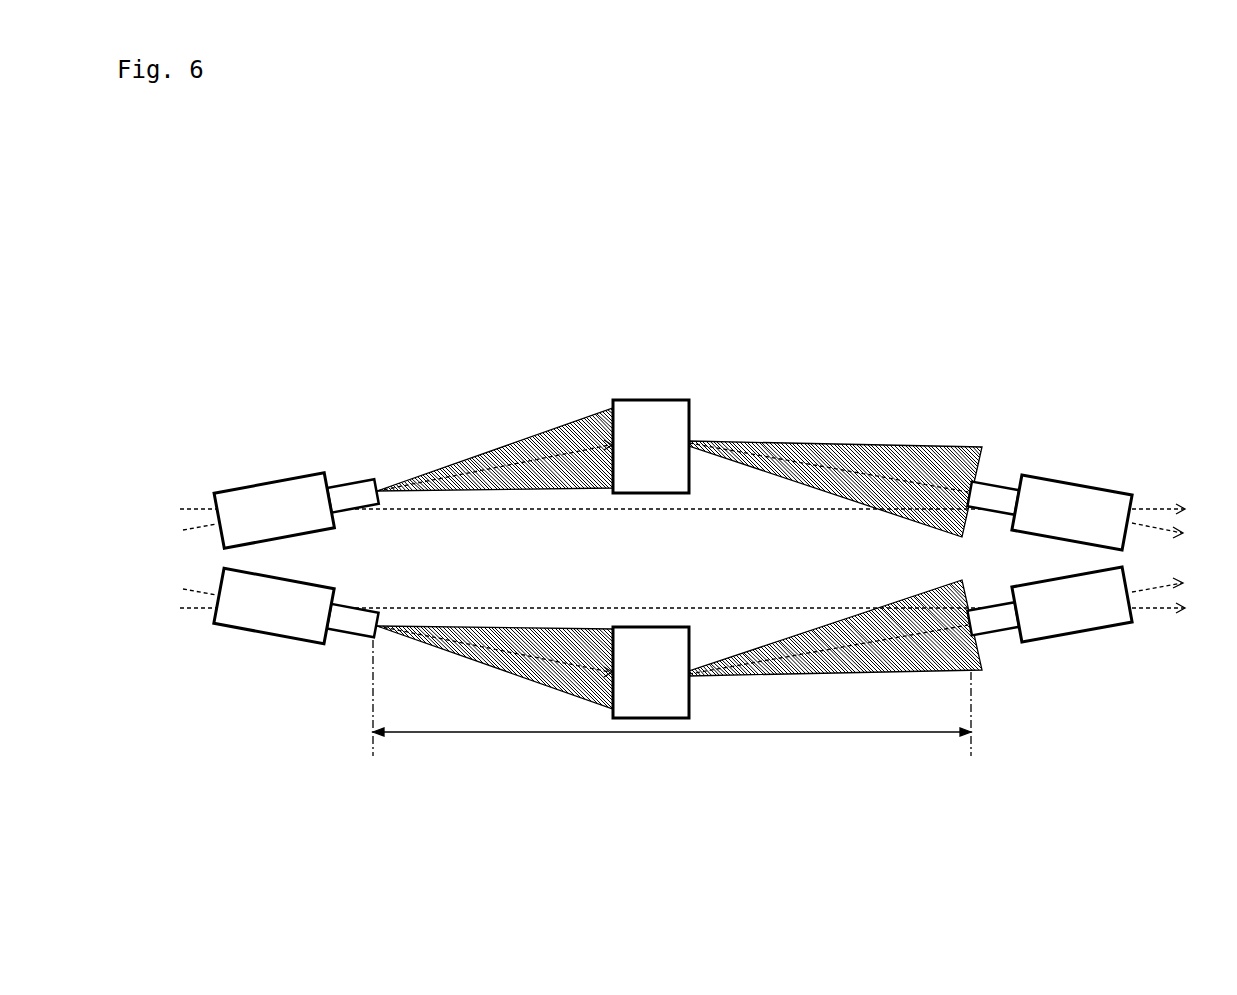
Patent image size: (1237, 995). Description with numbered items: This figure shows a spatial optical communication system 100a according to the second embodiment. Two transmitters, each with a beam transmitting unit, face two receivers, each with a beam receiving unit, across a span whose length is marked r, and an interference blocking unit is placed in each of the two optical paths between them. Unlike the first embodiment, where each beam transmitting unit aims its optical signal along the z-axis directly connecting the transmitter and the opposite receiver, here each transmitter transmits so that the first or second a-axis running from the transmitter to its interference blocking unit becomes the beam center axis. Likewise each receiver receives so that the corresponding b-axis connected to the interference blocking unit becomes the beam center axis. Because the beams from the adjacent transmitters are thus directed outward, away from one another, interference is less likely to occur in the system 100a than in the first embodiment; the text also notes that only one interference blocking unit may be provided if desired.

The spatial optical communication system 100a is at (458, 406).